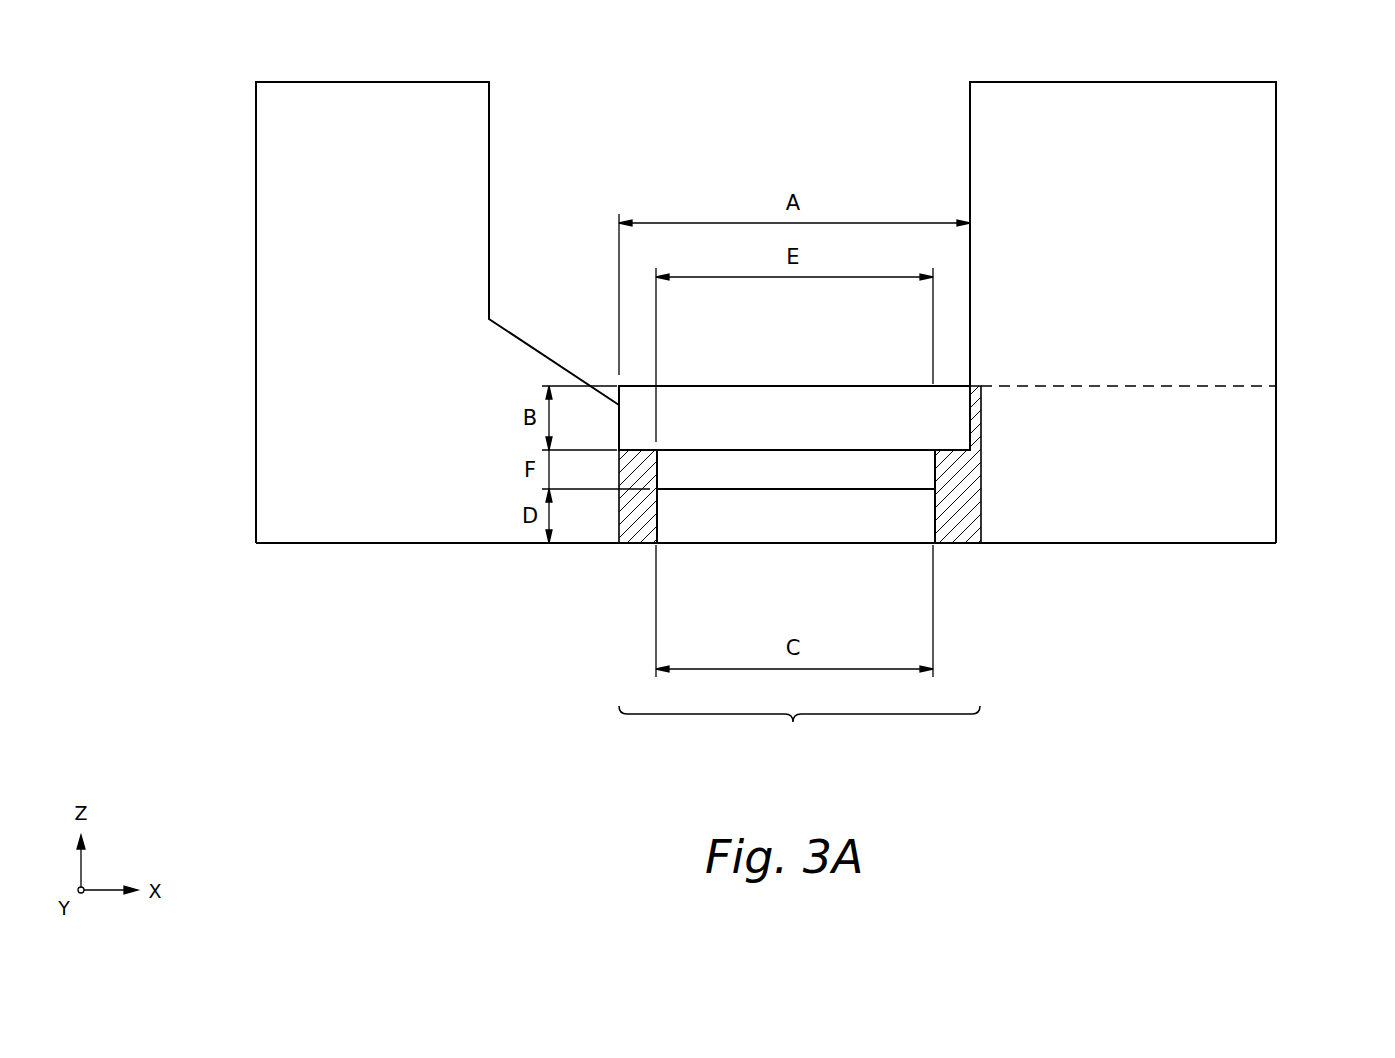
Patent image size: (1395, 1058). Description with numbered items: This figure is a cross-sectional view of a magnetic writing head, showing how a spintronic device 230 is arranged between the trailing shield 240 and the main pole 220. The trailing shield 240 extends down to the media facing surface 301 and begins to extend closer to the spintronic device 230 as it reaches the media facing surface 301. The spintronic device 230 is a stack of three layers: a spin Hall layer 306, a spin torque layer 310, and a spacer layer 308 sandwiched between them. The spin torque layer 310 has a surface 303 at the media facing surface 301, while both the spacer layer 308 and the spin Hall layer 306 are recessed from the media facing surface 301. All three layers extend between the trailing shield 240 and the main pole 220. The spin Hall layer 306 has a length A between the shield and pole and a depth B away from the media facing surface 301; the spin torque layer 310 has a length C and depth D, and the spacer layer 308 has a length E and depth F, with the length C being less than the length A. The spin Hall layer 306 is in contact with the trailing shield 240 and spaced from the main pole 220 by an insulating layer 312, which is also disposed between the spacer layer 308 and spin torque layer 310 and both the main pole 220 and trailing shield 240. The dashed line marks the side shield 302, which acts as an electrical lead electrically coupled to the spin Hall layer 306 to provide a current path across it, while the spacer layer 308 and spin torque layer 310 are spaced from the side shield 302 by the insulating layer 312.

The trailing shield 240 is at (355, 330).
The main pole 220 is at (1112, 330).
The side shield 302 is at (1238, 386).
The spintronic device 230 is at (827, 728).
The spin Hall layer 306 is at (790, 432).
The spacer layer 308 is at (790, 480).
The spin torque layer 310 is at (790, 528).
The insulating layer 312 is at (983, 575).
The surface 303 is at (770, 545).
The media facing surface 301 is at (272, 556).